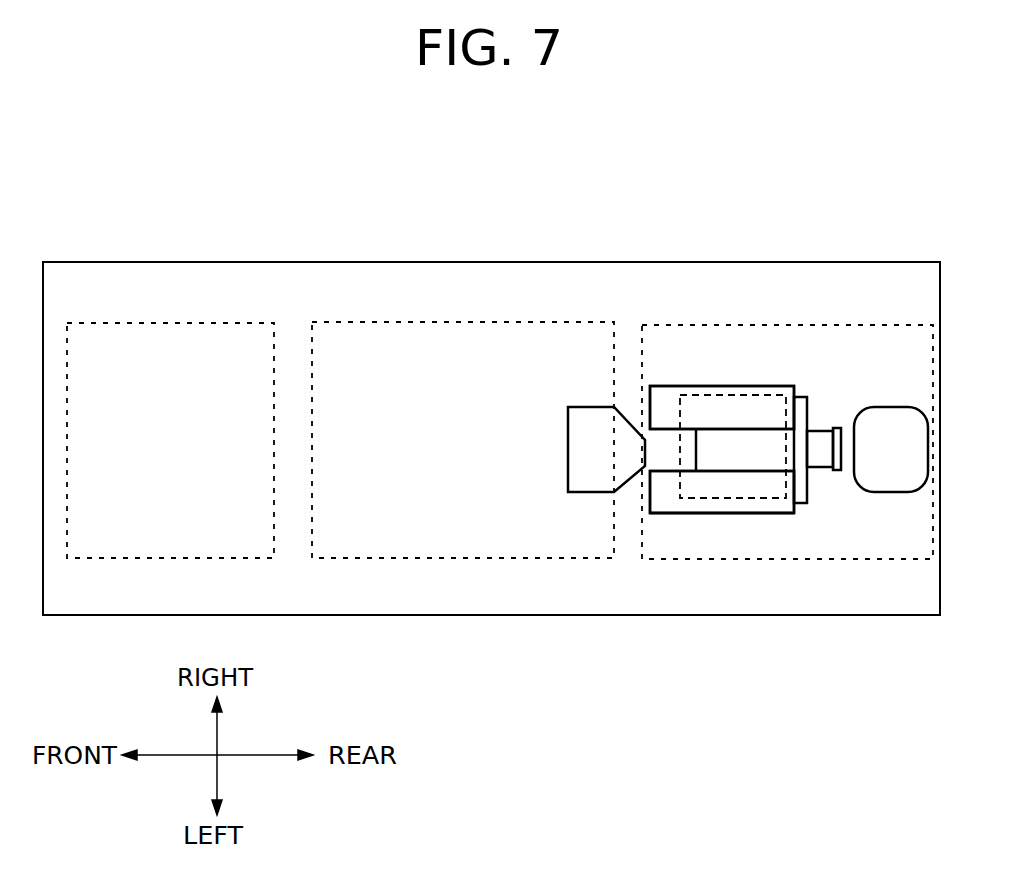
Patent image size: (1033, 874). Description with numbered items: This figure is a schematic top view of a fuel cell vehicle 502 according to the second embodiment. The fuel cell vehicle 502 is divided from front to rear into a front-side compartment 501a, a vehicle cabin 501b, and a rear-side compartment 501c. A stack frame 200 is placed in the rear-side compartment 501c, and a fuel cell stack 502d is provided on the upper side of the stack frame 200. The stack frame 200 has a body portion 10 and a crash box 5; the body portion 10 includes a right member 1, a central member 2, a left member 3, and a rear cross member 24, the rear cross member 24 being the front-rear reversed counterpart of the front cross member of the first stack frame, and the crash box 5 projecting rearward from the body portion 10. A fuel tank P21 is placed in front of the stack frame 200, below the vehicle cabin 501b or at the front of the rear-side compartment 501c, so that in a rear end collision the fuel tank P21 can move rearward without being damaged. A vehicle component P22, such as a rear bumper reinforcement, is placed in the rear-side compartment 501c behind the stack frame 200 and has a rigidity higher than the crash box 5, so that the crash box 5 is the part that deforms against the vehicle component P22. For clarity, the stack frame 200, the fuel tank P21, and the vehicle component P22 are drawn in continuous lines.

The fuel cell vehicle 502 is at (785, 203).
The front-side compartment 501a is at (117, 320).
The vehicle cabin 501b is at (382, 320).
The rear-side compartment 501c is at (680, 320).
The fuel tank P21 is at (586, 405).
The vehicle component P22 is at (892, 406).
The body portion 10 is at (672, 384).
The right member 1 is at (700, 385).
The stack frame 200 is at (744, 394).
The central member 2 is at (758, 463).
The rear cross member 24 is at (803, 395).
The crash box 5 is at (820, 469).
The fuel cell stack 502d is at (693, 503).
The left member 3 is at (765, 514).